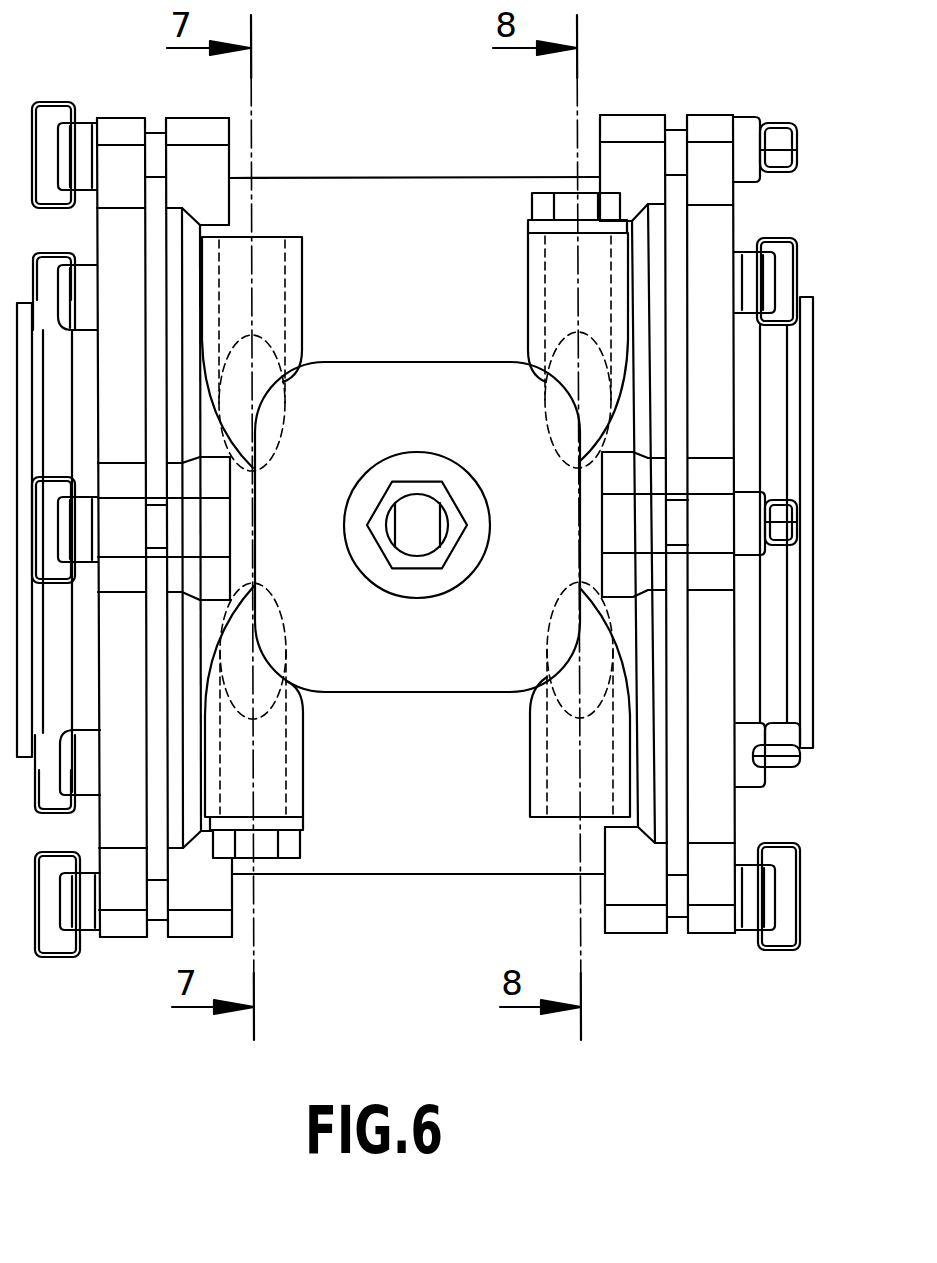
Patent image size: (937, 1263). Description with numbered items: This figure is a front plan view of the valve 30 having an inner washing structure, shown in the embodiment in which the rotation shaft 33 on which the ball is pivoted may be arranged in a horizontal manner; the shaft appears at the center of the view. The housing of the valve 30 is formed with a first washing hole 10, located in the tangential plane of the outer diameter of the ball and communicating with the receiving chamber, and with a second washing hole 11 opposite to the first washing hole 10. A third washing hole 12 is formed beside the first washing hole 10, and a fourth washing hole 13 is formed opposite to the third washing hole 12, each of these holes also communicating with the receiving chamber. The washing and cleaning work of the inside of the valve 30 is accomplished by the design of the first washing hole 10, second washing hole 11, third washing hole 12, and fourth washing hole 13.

The valve 30 is at (122, 988).
The first washing hole 10 is at (283, 282).
The third washing hole 12 is at (617, 267).
The second washing hole 11 is at (288, 745).
The fourth washing hole 13 is at (550, 783).
The rotation shaft 33 is at (420, 503).